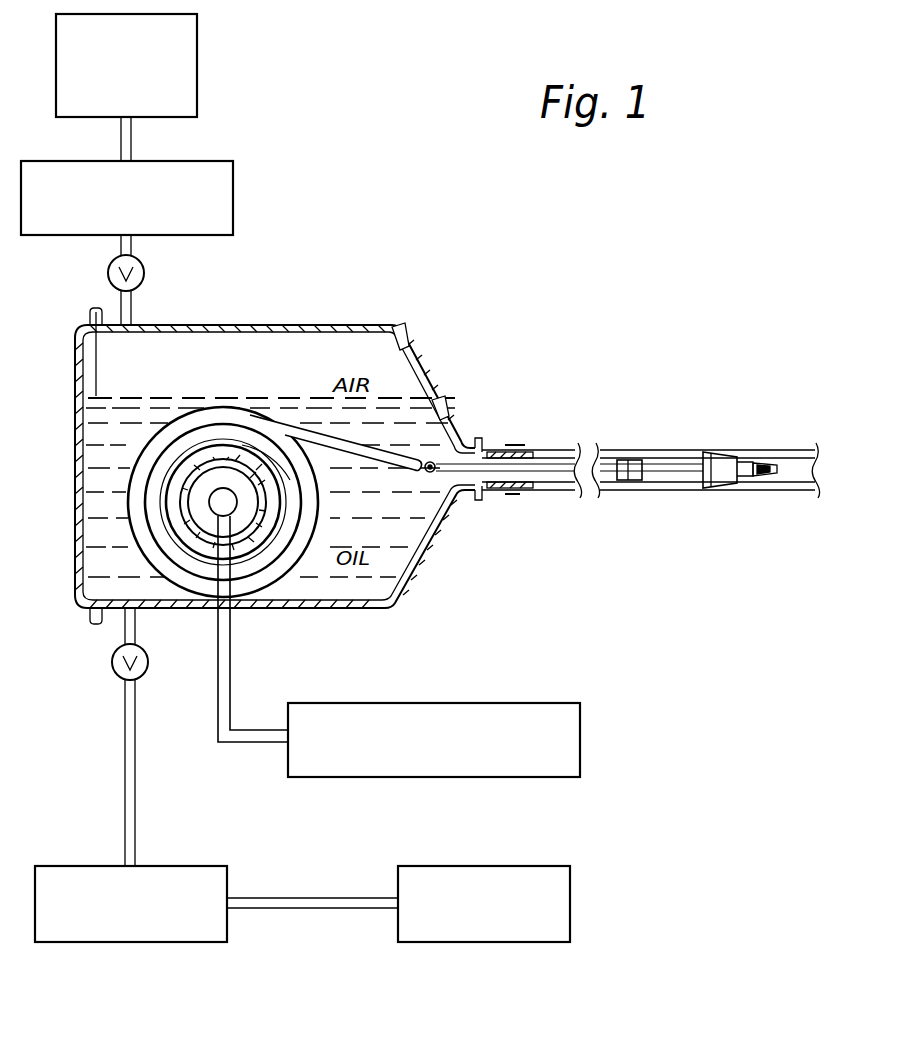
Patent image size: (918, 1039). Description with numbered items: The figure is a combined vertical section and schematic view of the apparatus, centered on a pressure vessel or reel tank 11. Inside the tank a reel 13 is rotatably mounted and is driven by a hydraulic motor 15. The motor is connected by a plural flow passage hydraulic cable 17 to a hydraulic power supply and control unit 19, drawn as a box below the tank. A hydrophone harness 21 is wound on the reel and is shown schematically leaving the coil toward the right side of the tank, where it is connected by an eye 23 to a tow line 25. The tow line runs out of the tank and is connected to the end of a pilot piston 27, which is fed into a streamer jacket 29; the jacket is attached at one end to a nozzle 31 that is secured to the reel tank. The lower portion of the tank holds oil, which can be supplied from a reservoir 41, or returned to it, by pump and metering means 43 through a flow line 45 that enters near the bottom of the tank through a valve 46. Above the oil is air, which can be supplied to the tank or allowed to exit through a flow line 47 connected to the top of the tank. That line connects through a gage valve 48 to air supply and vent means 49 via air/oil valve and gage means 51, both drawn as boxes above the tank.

The reel tank 11 is at (422, 368).
The reel 13 is at (265, 503).
The hydraulic motor 15 is at (254, 544).
The plural flow passage hydraulic cable 17 is at (232, 677).
The hydraulic power supply and control unit 19 is at (581, 742).
The hydrophone harness 21 is at (247, 430).
The eye 23 is at (430, 474).
The tow line 25 is at (563, 478).
The pilot piston 27 is at (706, 458).
The streamer jacket 29 is at (637, 490).
The nozzle 31 is at (489, 447).
The reservoir 41 is at (490, 945).
The pump and metering means 43 is at (140, 945).
The flow line 45 is at (131, 756).
The valve 46 is at (112, 661).
The flow line 47 is at (132, 304).
The gage valve 48 is at (145, 275).
The air supply and vent means 49 is at (197, 69).
The air/oil valve and gage means 51 is at (233, 202).